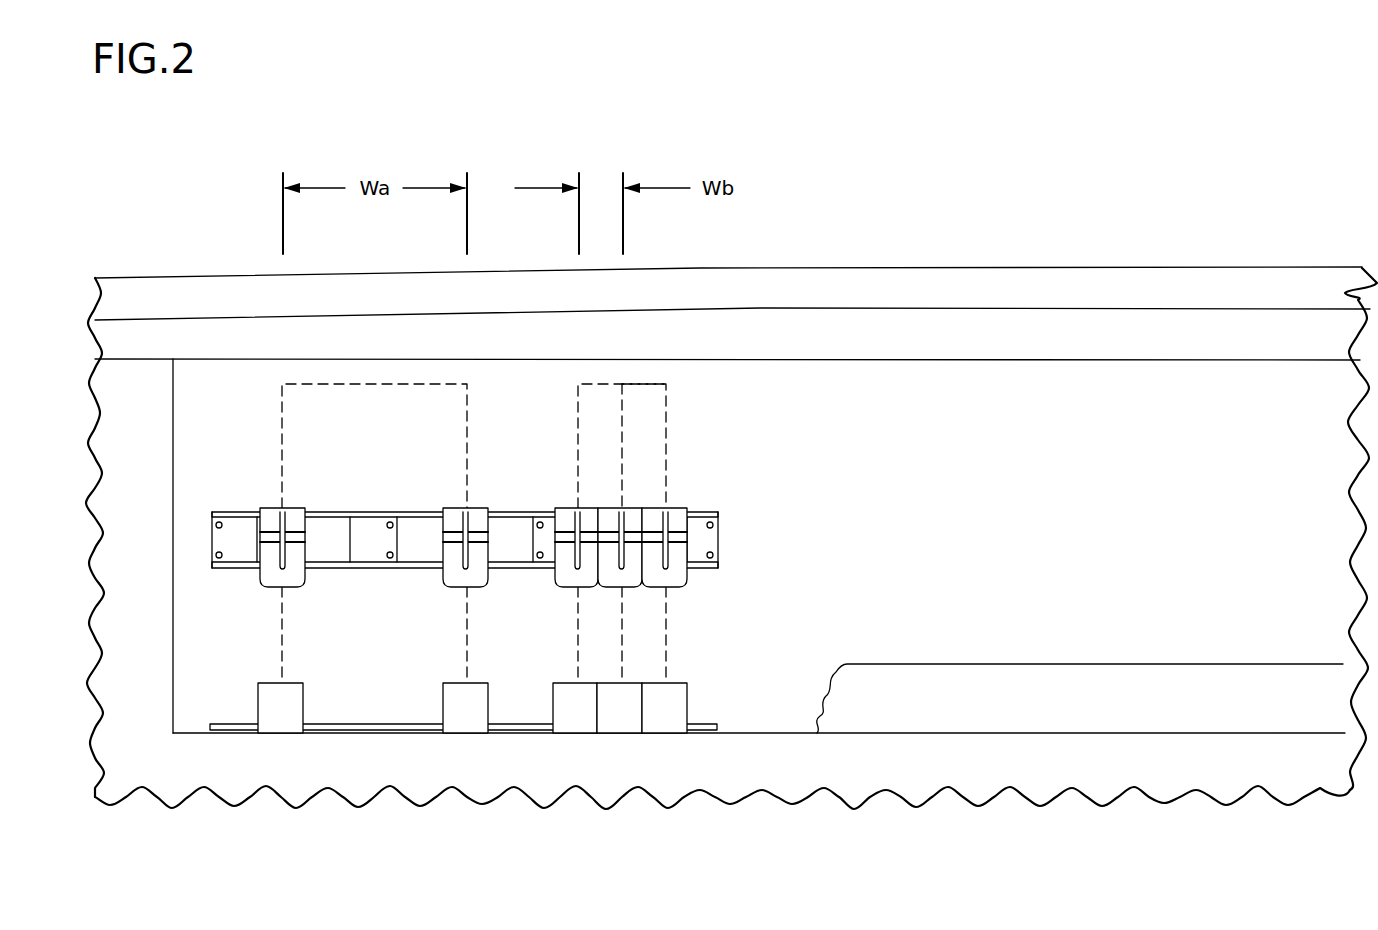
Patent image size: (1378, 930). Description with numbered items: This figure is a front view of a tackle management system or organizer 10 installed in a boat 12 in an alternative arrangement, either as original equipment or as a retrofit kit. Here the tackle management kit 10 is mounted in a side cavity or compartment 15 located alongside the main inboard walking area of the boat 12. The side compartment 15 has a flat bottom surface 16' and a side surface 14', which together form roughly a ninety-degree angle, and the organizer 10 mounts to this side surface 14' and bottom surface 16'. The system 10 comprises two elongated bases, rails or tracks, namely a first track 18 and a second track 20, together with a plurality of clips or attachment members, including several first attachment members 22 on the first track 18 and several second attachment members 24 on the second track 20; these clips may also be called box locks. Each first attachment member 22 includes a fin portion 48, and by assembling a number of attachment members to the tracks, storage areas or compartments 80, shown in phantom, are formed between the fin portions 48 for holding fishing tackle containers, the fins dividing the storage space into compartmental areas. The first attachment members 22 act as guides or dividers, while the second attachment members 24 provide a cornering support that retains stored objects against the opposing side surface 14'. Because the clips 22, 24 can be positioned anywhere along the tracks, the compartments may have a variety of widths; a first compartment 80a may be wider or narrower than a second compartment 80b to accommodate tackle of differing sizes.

The tackle management system 10 is at (518, 532).
The boat 12 is at (1050, 195).
The side surface 14' is at (596, 546).
The side cavity or compartment 15 is at (967, 392).
The flat bottom surface 16' is at (759, 691).
The first track 18 is at (237, 512).
The second track 20 is at (372, 725).
The first attachment member 22 is at (473, 515).
The second attachment member 24 is at (460, 708).
The fin portion 48 is at (278, 558).
The storage compartment 80 is at (645, 462).
The first compartment 80a is at (310, 465).
The second compartment 80b is at (602, 458).